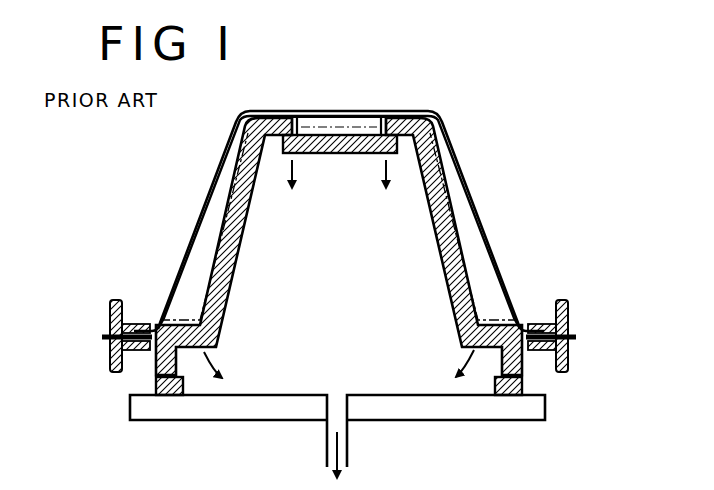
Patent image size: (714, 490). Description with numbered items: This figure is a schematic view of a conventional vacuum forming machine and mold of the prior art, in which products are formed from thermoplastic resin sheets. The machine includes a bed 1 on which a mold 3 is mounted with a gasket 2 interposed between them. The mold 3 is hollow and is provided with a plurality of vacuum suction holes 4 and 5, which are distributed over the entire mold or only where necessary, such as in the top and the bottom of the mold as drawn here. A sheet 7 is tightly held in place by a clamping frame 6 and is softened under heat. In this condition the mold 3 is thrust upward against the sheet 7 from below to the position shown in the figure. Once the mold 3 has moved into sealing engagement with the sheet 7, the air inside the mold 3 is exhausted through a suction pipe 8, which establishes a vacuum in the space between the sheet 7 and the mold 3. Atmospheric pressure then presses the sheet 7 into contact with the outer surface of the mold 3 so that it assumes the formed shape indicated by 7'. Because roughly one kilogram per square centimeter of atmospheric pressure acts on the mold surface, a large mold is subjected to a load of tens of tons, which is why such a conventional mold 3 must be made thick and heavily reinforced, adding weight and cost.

The bed 1 is at (430, 412).
The gasket 2 is at (524, 392).
The mold 3 is at (444, 214).
The vacuum suction hole 4 is at (318, 154).
The vacuum suction hole 5 is at (219, 341).
The clamping frame 6 is at (566, 323).
The sheet 7 is at (340, 103).
The sheet (formed shape) 7' is at (341, 221).
The suction pipe 8 is at (326, 450).